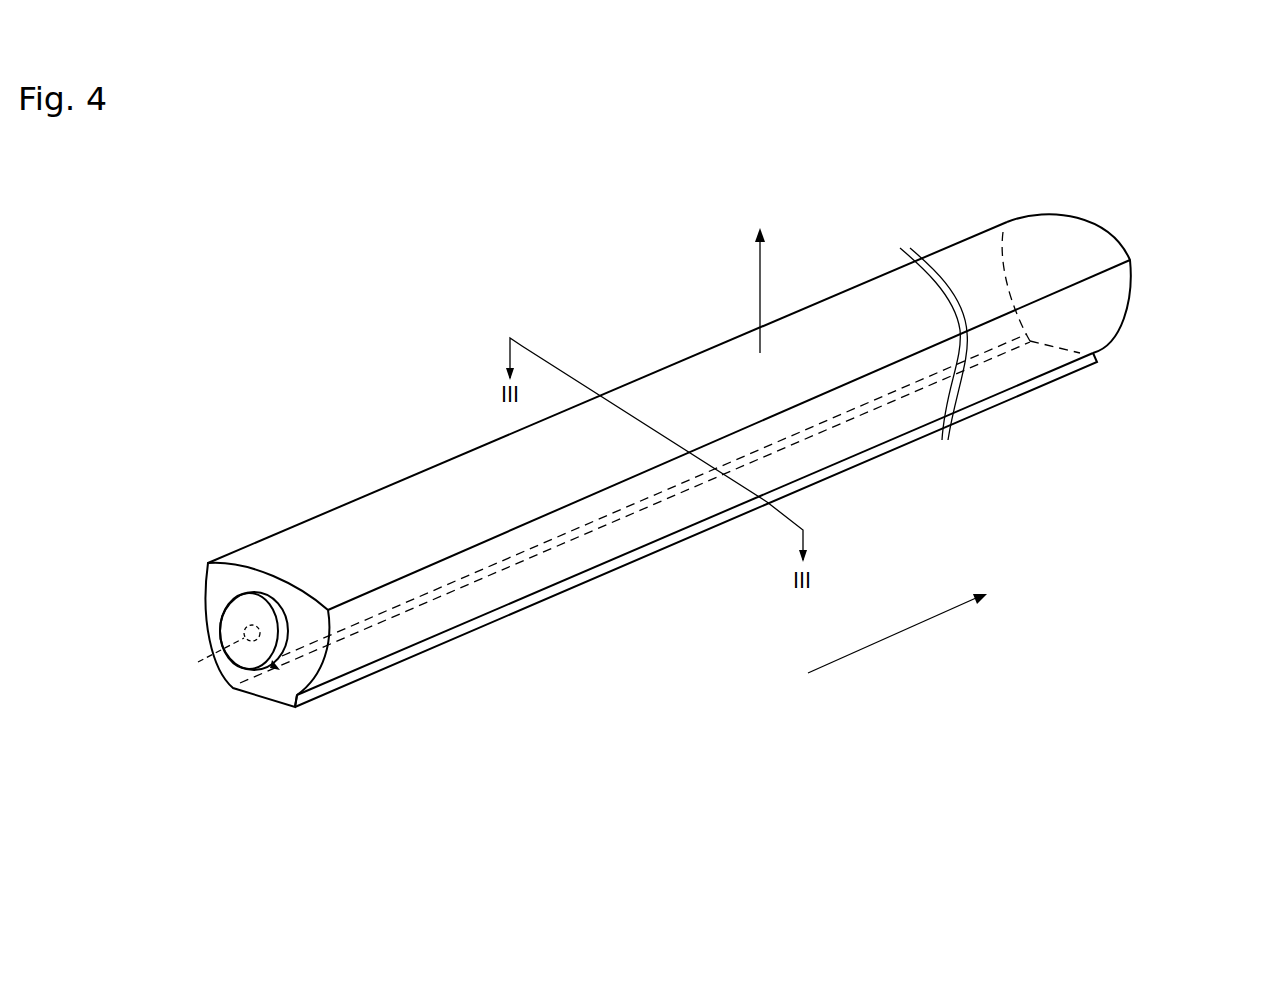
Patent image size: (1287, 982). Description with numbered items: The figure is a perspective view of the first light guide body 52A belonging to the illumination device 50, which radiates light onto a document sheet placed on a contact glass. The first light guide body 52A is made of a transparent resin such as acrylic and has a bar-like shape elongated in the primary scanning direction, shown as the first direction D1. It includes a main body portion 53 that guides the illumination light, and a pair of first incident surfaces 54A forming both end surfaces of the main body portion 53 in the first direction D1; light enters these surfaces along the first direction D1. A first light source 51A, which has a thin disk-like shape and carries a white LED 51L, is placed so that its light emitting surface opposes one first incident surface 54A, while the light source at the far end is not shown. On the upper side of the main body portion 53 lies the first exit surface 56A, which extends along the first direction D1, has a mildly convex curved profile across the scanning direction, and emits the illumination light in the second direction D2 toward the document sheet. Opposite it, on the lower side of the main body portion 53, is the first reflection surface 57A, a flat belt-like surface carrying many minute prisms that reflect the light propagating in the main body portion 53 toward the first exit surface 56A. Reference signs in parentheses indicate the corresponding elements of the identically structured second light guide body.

The illumination device 50 is at (468, 300).
The first light source 51A is at (240, 586).
The white LED 51L is at (207, 651).
The first light guide body 52A is at (672, 352).
The main body portion 53 is at (605, 507).
The first incident surface 54A is at (282, 683).
The first exit surface 56A is at (407, 510).
The first reflection surface 57A is at (503, 582).
The first direction D1 is at (912, 628).
The second direction D2 is at (762, 277).